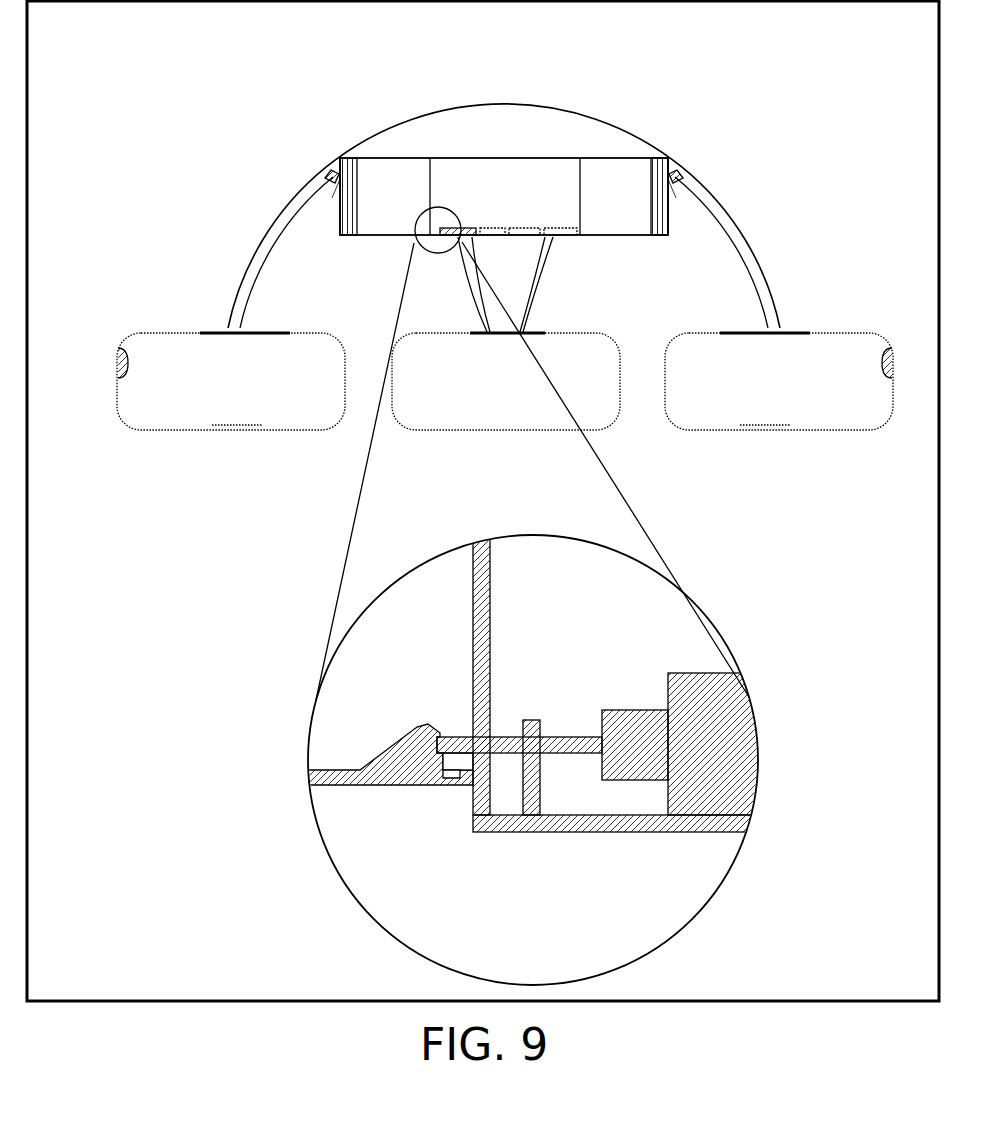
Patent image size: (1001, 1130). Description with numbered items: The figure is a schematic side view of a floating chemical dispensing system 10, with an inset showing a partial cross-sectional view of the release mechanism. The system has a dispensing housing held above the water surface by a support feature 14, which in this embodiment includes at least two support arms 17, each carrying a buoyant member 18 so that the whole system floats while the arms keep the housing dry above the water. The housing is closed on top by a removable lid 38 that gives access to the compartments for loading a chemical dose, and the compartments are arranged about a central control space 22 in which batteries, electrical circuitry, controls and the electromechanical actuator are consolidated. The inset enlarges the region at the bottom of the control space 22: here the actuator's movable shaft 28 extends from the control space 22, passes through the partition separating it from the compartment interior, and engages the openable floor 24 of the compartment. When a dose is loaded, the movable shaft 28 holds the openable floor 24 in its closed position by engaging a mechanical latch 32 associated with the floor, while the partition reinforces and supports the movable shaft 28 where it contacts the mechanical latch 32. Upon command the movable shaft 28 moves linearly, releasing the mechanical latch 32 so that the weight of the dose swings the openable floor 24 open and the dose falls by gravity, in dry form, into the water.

The chemical dispensing system 10 is at (300, 135).
The support feature 14 is at (755, 255).
The support arm 17 is at (253, 280).
The buoyant member 18 is at (185, 382).
The control space 22 is at (435, 187).
The openable floor 24 is at (330, 777).
The movable shaft 28 is at (562, 748).
The mechanical latch 32 is at (403, 783).
The removable lid 38 is at (617, 127).